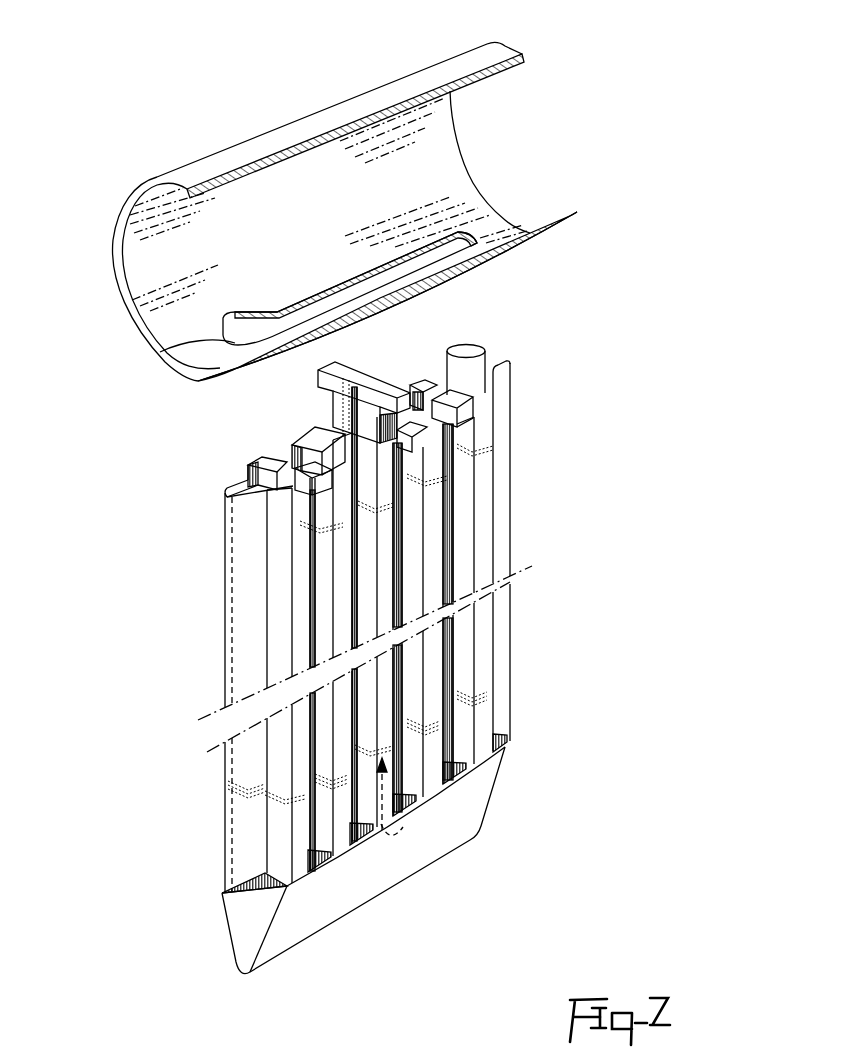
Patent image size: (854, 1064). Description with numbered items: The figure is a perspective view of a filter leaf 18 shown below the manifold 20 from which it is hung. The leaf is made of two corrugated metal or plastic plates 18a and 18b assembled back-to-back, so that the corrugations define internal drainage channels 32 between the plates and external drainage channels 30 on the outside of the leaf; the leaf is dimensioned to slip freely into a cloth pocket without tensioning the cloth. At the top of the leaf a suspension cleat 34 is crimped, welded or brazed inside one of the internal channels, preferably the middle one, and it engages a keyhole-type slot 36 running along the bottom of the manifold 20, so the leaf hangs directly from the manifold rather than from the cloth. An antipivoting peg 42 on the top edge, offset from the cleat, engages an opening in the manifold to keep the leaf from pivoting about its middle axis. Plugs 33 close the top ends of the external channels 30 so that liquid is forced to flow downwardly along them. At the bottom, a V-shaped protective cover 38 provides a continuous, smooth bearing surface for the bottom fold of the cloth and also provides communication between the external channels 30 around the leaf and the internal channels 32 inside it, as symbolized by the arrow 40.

The filter leaf 18 is at (524, 635).
The corrugated plate 18a is at (298, 592).
The corrugated plate 18b is at (243, 465).
The manifold 20 is at (127, 207).
The external drainage channels 30 is at (318, 624).
The internal drainage channels 32 is at (312, 450).
The plugs 33 is at (277, 452).
The suspension cleats 34 is at (380, 383).
The keyhole-type slots 36 is at (168, 352).
The protective cover 38 is at (350, 892).
The arrow 40 is at (408, 757).
The antipivoting peg 42 is at (470, 345).